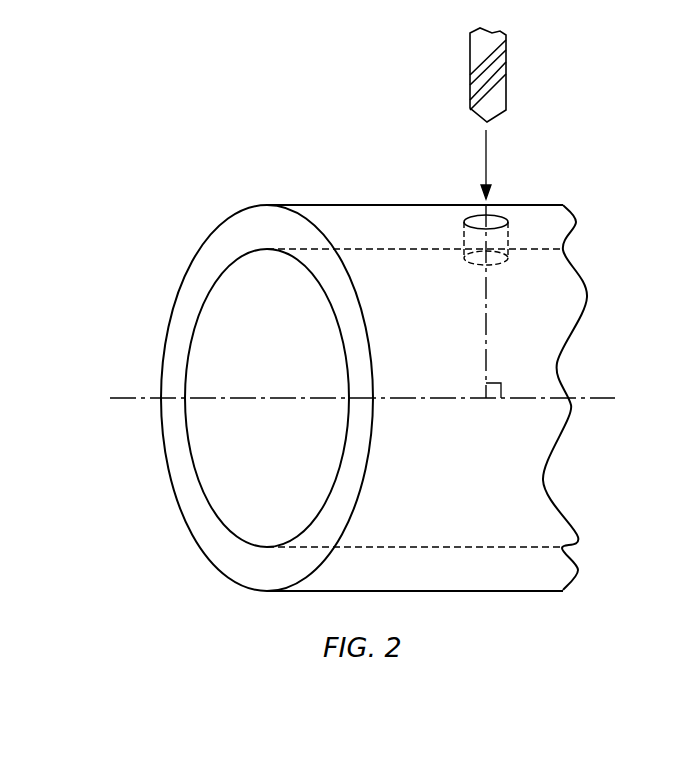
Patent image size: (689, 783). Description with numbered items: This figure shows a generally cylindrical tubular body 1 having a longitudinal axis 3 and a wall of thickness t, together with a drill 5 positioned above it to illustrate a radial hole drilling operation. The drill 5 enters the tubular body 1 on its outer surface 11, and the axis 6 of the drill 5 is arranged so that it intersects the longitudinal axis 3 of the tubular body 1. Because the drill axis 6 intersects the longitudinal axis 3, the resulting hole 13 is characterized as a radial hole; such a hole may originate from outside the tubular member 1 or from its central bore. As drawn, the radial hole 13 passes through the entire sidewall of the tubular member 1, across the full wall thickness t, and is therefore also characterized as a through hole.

The tubular body 1 is at (140, 465).
The longitudinal axis 3 is at (122, 400).
The drill 5 is at (459, 62).
The axis of drill 6 is at (486, 313).
The outer surface 11 is at (552, 203).
The radial hole 13 is at (502, 210).
The thickness t is at (288, 484).